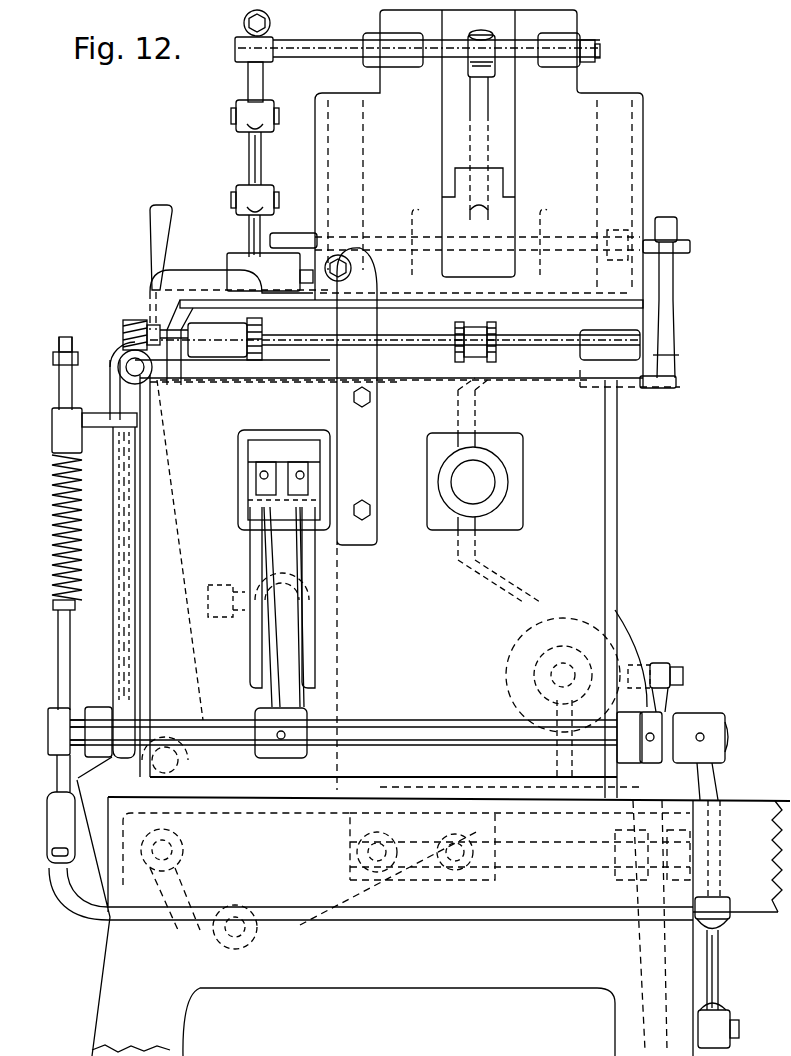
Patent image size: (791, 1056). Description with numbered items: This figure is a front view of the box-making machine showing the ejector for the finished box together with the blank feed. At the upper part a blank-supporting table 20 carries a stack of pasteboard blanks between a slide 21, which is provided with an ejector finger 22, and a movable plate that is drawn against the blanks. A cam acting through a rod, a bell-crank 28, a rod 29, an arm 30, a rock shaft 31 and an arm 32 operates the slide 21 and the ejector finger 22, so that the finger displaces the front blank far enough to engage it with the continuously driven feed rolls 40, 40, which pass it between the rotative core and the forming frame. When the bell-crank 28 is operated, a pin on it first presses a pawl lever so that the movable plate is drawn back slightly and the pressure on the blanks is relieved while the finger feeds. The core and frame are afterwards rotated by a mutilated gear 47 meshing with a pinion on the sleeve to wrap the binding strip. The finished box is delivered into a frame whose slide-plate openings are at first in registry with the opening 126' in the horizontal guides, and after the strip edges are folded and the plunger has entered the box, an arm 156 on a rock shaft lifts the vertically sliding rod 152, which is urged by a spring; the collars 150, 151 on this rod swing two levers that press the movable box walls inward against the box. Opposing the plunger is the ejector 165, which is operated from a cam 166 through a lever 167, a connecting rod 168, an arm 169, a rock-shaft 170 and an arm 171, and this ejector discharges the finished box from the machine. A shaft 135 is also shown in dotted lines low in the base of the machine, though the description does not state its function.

The rock shaft 31 is at (312, 40).
The arm 30 is at (253, 82).
The rod 29 is at (250, 160).
The bell-crank 28 is at (252, 235).
The arm 32 is at (492, 70).
The slide 21 is at (508, 200).
The ejector finger 22 is at (475, 227).
The blank-supporting table 20 is at (637, 315).
The feed rolls 40 is at (540, 340).
The collar 151 is at (53, 362).
The collar 150 is at (55, 600).
The vertically sliding rod 152 is at (60, 693).
The mutilated gear 47 is at (127, 553).
The ejector 165 is at (277, 487).
The arm 171 is at (280, 553).
The opening 126' is at (504, 490).
The cam 166 is at (627, 637).
The rock-shaft 170 is at (430, 723).
The lever 167 is at (662, 703).
The arm 169 is at (712, 793).
The connecting rod 168 is at (715, 970).
The arm 156 is at (55, 895).
The shaft 135 is at (243, 932).